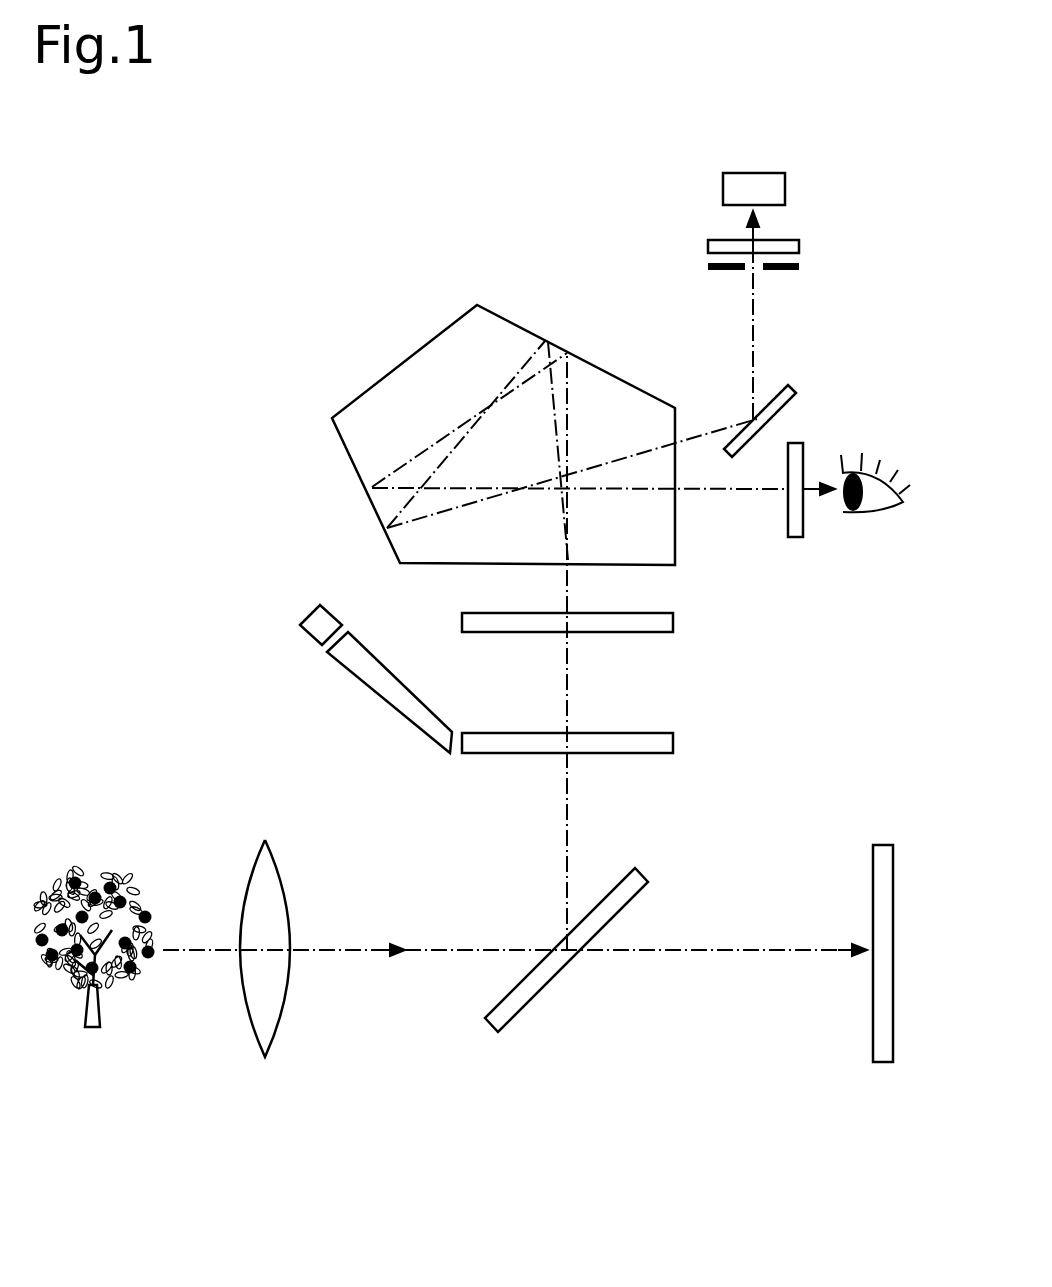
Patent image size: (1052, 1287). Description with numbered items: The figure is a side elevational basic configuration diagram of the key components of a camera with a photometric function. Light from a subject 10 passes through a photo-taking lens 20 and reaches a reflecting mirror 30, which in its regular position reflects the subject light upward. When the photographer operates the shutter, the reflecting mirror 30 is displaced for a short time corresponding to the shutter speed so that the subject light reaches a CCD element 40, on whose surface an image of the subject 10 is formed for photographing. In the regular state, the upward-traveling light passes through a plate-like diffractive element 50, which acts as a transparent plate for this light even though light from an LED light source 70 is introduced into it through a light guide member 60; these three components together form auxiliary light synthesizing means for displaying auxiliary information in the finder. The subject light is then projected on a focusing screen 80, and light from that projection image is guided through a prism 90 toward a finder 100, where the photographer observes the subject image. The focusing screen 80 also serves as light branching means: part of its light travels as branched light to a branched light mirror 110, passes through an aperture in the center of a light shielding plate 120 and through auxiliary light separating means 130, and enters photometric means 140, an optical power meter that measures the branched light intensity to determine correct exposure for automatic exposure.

The subject 10 is at (98, 878).
The photo-taking lens 20 is at (260, 878).
The reflecting mirror 30 is at (513, 1010).
The CCD element 40 is at (880, 1050).
The plate-like diffractive element 50 is at (657, 745).
The light guide member 60 is at (390, 690).
The LED light source 70 is at (315, 622).
The focusing screen 80 is at (657, 625).
The prism 90 is at (407, 370).
The finder 100 is at (797, 450).
The branched light mirror 110 is at (778, 392).
The light shielding plate 120 is at (800, 266).
The auxiliary light separating means 130 is at (710, 247).
The photometric means 140 is at (723, 190).